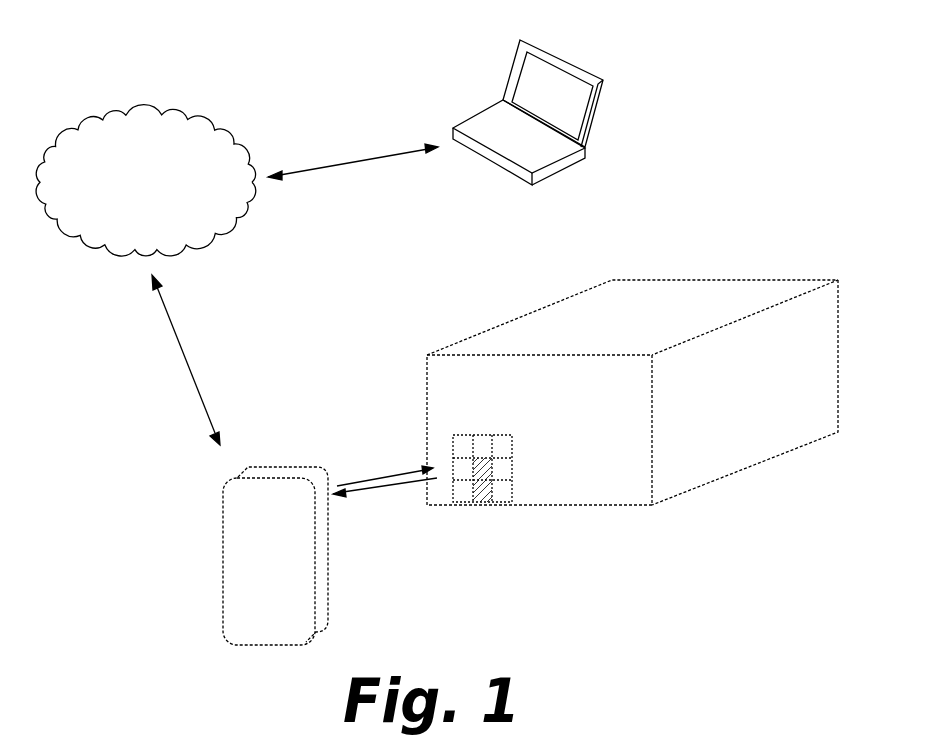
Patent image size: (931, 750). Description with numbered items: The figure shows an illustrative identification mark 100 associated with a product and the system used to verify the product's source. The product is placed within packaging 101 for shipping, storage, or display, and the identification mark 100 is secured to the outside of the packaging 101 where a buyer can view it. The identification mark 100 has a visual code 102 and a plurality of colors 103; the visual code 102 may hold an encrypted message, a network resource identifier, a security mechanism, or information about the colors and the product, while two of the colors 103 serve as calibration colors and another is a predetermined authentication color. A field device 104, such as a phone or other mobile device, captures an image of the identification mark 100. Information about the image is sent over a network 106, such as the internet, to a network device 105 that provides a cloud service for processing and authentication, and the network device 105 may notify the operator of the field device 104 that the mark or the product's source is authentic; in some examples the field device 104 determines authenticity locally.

The identification mark 100 is at (398, 421).
The packaging 101 is at (602, 295).
The visual code 102 is at (478, 465).
The plurality of colors 103 is at (502, 470).
The field device 104 is at (266, 577).
The network device 105 is at (580, 73).
The network 106 is at (108, 135).